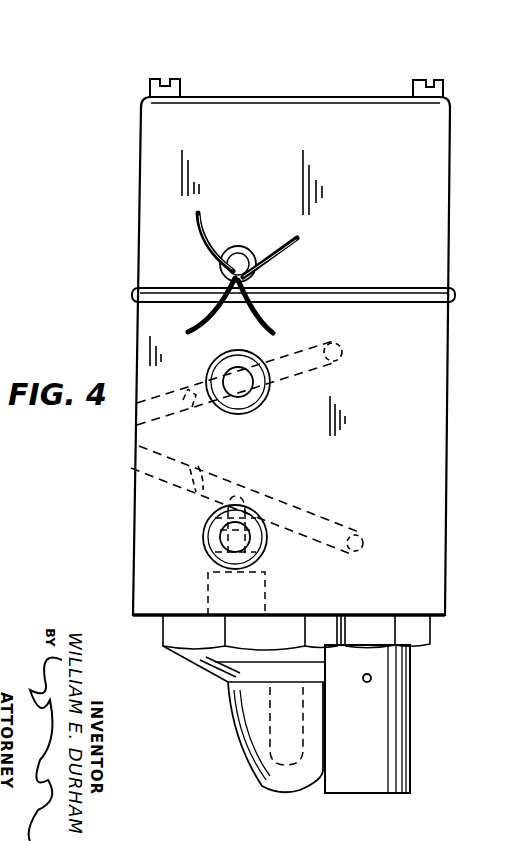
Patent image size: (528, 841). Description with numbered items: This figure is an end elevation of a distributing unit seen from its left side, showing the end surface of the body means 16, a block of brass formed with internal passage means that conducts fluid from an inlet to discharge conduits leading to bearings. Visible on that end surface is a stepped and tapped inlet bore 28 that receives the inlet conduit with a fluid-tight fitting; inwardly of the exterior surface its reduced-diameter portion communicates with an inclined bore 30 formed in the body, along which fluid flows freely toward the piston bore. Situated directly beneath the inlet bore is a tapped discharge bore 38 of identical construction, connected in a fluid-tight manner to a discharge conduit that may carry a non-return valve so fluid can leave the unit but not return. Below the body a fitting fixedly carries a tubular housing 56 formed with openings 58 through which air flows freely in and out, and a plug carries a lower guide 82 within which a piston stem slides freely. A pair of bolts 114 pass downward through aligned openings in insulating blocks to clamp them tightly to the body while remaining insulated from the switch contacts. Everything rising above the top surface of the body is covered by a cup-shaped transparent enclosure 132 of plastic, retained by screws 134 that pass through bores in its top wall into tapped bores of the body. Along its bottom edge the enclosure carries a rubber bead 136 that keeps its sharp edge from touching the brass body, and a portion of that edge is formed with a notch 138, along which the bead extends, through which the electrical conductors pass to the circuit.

The body means 16 is at (450, 362).
The tapped inlet bore 28 is at (264, 351).
The inclined bore 30 is at (342, 346).
The tapped discharge bore 38 is at (253, 522).
The tubular housing 56 is at (398, 752).
The openings 58 is at (371, 678).
The lower guide 82 is at (282, 791).
The bolts 114 is at (203, 373).
The transparent enclosure 132 is at (450, 192).
The screws 134 is at (443, 88).
The bead 136 is at (455, 295).
The notch 138 is at (232, 276).